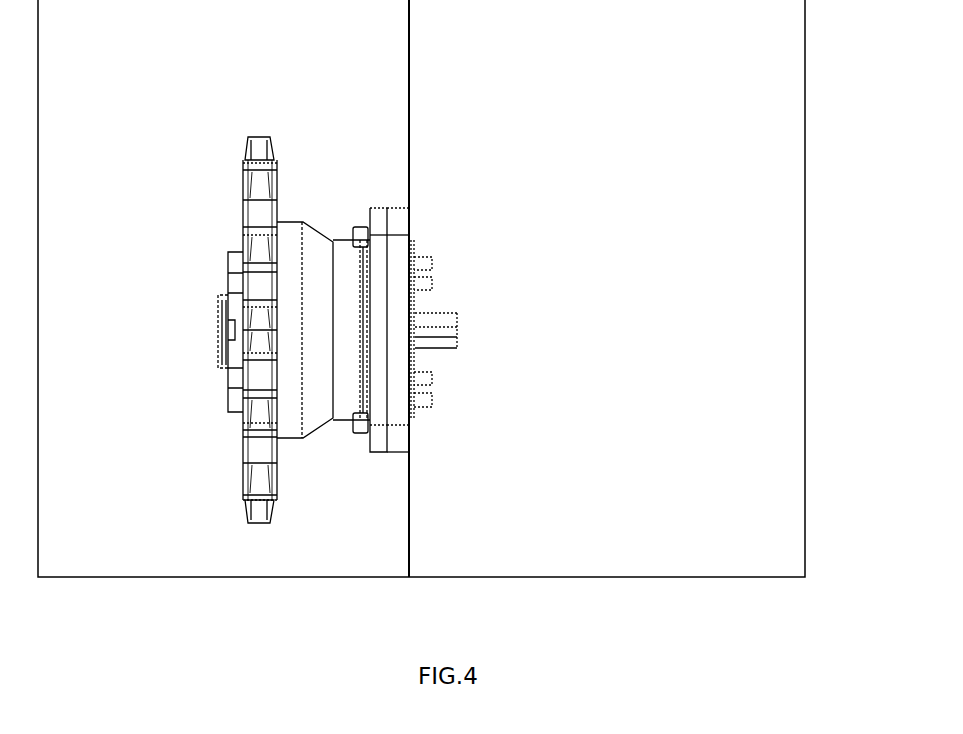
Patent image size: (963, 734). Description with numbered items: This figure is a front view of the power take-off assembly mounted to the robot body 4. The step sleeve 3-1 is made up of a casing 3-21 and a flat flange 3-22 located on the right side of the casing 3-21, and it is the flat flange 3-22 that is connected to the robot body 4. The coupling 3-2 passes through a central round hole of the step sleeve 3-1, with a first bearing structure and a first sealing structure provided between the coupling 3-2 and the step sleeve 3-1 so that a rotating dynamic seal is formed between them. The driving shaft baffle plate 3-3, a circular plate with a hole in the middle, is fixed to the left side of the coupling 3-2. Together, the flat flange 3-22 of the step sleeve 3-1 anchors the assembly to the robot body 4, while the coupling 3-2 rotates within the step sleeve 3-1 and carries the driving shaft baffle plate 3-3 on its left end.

The robot body 4 is at (805, 330).
The driving shaft baffle plate 3-3 is at (232, 265).
The step sleeve 3-1 is at (409, 234).
The casing 3-21 is at (380, 242).
The flat flange 3-22 is at (398, 223).
The coupling 3-2 is at (457, 328).